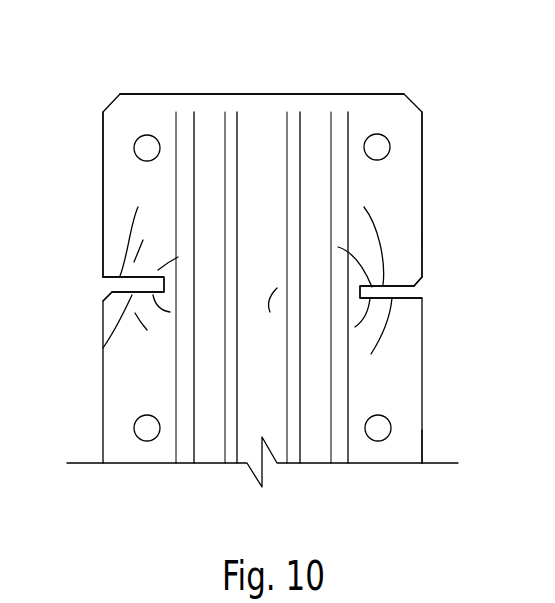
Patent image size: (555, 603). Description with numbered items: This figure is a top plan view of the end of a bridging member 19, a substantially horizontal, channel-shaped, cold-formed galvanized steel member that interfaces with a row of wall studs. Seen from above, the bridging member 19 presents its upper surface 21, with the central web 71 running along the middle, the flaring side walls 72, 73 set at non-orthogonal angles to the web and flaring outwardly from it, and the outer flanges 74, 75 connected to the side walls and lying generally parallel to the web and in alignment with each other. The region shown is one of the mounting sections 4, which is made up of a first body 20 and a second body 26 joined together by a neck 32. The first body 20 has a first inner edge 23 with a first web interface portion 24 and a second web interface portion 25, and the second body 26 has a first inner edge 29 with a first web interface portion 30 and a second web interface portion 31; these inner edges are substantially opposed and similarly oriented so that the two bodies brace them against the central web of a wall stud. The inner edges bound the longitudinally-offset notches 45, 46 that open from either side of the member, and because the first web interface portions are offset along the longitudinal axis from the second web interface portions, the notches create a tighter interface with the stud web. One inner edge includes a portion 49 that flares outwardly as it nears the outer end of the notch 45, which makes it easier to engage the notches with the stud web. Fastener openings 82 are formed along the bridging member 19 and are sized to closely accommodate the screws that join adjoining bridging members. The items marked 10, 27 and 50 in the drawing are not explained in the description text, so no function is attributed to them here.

The mounting section 4 is at (434, 256).
The slat 10 is at (405, 383).
The first bridging member 19 is at (438, 439).
The first body 20 is at (159, 332).
The upper surface 21 is at (405, 352).
The first inner edge 23 is at (261, 322).
The first web interface portion 24 is at (103, 348).
The second web interface portion 25 is at (366, 340).
The second body 26 is at (158, 245).
The second shoulder 27 is at (186, 256).
The first inner edge 29 is at (335, 257).
The first web interface portion 30 is at (144, 232).
The second web interface portion 31 is at (358, 238).
The neck 32 is at (260, 321).
The notch 45 is at (108, 286).
The notch 46 is at (410, 296).
The flared portion 49 is at (105, 298).
The top edge 50 is at (375, 100).
The web 71 is at (267, 132).
The flaring side wall 72 is at (205, 123).
The flaring side wall 73 is at (318, 127).
The outer flange 74 is at (118, 243).
The outer flange 75 is at (403, 226).
The fastener opening 82 is at (147, 148).